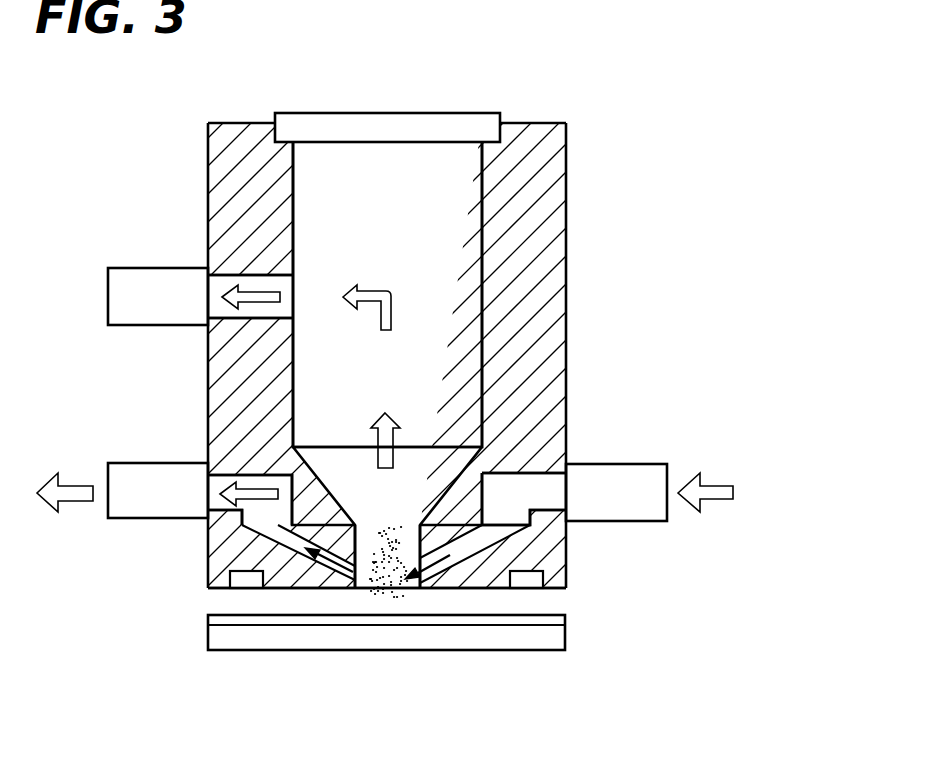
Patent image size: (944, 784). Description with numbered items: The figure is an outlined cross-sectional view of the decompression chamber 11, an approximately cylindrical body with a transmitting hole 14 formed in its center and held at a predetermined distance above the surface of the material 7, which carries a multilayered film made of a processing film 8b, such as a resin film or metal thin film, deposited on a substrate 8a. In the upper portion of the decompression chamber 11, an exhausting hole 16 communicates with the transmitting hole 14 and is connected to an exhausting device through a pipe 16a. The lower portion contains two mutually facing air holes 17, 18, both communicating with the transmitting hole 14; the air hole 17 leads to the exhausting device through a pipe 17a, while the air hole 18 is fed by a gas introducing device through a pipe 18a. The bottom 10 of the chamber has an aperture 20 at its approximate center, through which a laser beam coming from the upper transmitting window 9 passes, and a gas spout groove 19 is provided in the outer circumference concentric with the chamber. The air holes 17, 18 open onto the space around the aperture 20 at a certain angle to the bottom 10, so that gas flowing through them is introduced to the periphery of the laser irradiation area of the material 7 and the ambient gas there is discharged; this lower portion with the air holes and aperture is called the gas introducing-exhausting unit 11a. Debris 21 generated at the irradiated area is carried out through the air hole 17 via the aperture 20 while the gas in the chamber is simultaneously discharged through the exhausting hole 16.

The material 7 is at (650, 603).
The substrate 8a is at (553, 637).
The processing film 8b is at (553, 621).
The upper transmitting window 9 is at (444, 125).
The bottom 10 is at (285, 590).
The decompression chamber 11 is at (533, 295).
The gas introducing-exhausting unit 11a is at (740, 465).
The transmitting hole 14 is at (449, 212).
The exhausting hole 16 is at (218, 306).
The pipe 16a is at (125, 268).
The air hole 17 is at (220, 500).
The pipe 17a is at (125, 463).
The air hole 18 is at (560, 485).
The pipe 18a is at (590, 465).
The gas spout groove 19 is at (245, 577).
The aperture 20 is at (392, 590).
The debris 21 is at (375, 593).